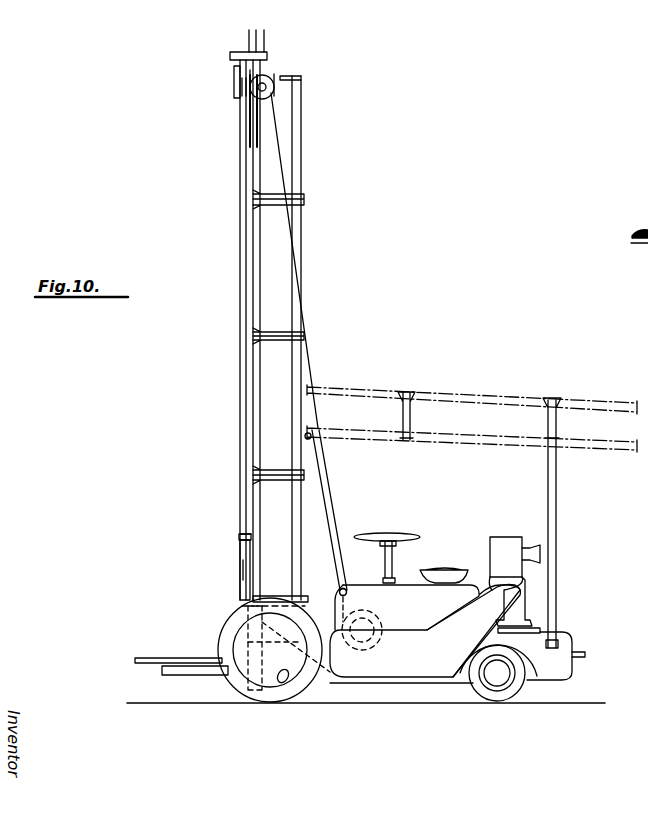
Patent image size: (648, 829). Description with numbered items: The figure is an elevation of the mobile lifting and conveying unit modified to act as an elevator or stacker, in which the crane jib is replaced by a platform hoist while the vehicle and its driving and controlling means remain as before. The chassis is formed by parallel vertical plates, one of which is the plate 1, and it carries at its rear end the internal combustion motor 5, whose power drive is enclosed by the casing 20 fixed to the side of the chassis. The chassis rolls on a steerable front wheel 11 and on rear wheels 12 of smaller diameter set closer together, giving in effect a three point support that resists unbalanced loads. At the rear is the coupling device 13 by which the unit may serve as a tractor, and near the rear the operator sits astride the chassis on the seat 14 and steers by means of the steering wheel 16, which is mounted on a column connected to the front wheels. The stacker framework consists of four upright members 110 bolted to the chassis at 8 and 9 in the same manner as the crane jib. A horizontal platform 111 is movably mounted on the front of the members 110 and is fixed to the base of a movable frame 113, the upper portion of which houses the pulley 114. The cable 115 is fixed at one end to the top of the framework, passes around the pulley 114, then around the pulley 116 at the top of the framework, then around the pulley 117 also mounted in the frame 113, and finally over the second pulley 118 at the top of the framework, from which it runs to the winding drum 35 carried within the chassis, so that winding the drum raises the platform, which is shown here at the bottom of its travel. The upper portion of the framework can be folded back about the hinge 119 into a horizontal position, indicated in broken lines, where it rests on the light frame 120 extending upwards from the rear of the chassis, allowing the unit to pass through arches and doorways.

The vertical plate 1 is at (302, 604).
The internal combustion motor 5 is at (505, 545).
The bolting point 8 is at (281, 676).
The bolting point 9 is at (347, 593).
The front wheels 11 is at (246, 689).
The rear wheels 12 is at (512, 688).
The coupling device 13 is at (580, 653).
The seat 14 is at (440, 567).
The steering wheel 16 is at (396, 533).
The casing 20 is at (517, 601).
The drum 35 is at (382, 645).
The upright members 110 is at (297, 250).
The horizontal platform 111 is at (168, 634).
The movable frame 113 is at (243, 565).
The pulley 114 is at (245, 535).
The cable 115 is at (240, 356).
The pulley 116 is at (241, 96).
The pulley 117 is at (252, 535).
The second pulley 118 is at (274, 90).
The hinge 119 is at (311, 438).
The light frame 120 is at (553, 494).